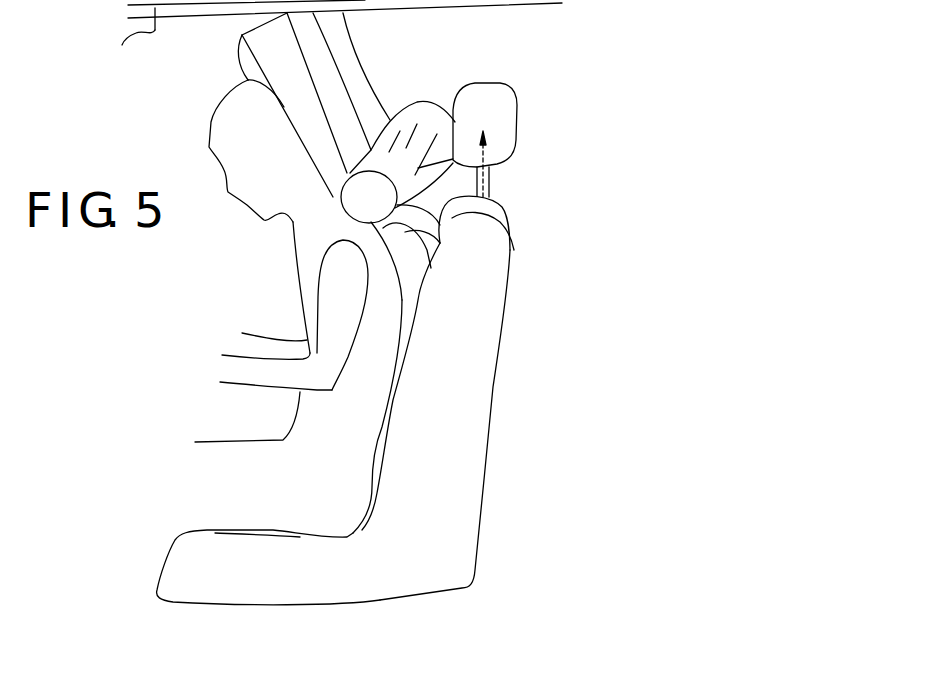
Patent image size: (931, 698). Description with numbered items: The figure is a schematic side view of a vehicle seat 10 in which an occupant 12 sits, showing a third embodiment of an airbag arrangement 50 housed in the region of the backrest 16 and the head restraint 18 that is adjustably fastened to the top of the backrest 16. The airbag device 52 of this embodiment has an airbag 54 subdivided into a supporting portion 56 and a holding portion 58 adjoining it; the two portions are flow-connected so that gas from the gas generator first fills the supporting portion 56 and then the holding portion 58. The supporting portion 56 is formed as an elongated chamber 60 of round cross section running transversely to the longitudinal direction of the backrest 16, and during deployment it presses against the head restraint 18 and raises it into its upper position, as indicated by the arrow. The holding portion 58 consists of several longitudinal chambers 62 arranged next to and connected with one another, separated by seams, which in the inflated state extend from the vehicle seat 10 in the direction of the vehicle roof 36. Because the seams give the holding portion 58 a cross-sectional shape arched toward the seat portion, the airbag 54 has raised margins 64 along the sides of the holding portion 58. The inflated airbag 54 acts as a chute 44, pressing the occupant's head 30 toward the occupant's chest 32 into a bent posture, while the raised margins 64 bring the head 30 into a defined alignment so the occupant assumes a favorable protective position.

The vehicle seat 10 is at (512, 440).
The occupant 12 is at (280, 257).
The backrest 16 is at (475, 358).
The head restraint 18 is at (505, 117).
The occupant's head 30 is at (232, 148).
The occupant's chest 32 is at (303, 302).
The vehicle roof 36 is at (536, 3).
The chute 44 is at (243, 80).
The airbag arrangement 50 is at (492, 209).
The airbag device 52 is at (391, 84).
The airbag 54 is at (508, 247).
The supporting portion 56 is at (440, 110).
The holding portion 58 is at (347, 62).
The elongated chamber 60 is at (477, 183).
The longitudinal chambers 62 is at (273, 48).
The raised margins 64 is at (283, 100).